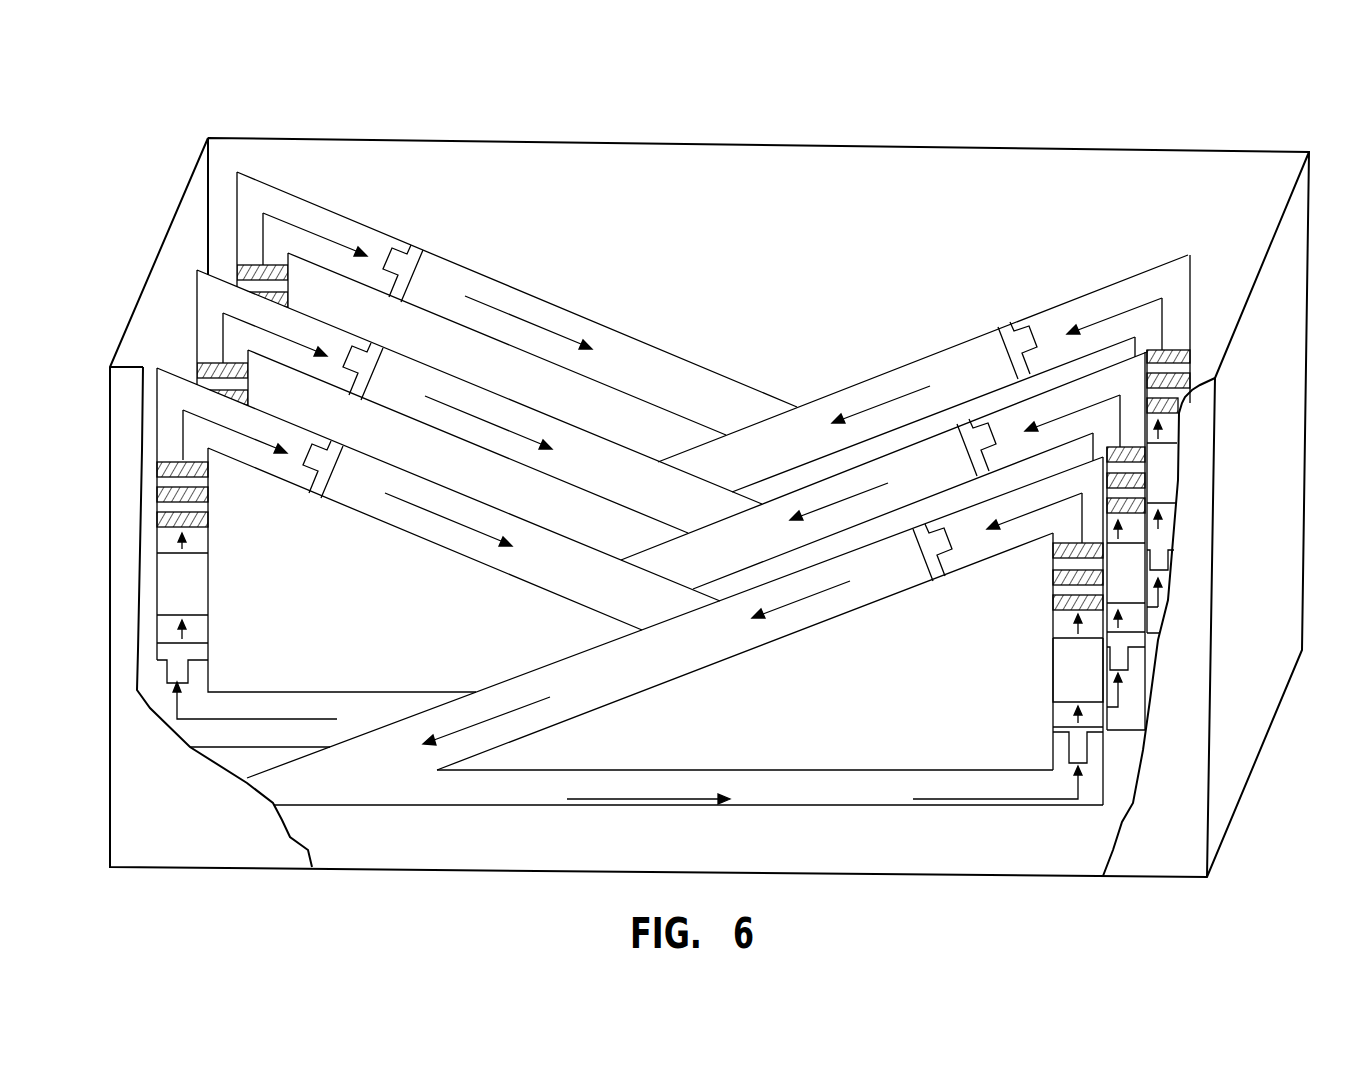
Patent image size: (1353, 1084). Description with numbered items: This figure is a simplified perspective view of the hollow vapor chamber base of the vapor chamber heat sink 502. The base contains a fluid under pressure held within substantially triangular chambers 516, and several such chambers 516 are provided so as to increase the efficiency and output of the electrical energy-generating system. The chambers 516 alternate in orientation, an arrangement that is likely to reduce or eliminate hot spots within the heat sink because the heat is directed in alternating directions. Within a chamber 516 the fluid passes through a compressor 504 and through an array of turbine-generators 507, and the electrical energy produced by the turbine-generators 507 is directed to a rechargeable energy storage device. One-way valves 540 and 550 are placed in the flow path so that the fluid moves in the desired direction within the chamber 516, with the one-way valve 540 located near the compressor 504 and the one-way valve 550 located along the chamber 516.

The vapor chamber heat sink 502 is at (1250, 137).
The compressor 504 is at (1065, 670).
The array of turbine-generators 507 is at (1050, 543).
The substantially triangular chamber 516 is at (1145, 697).
The one-way valve 540 is at (1068, 740).
The one-way valve 550 is at (925, 550).